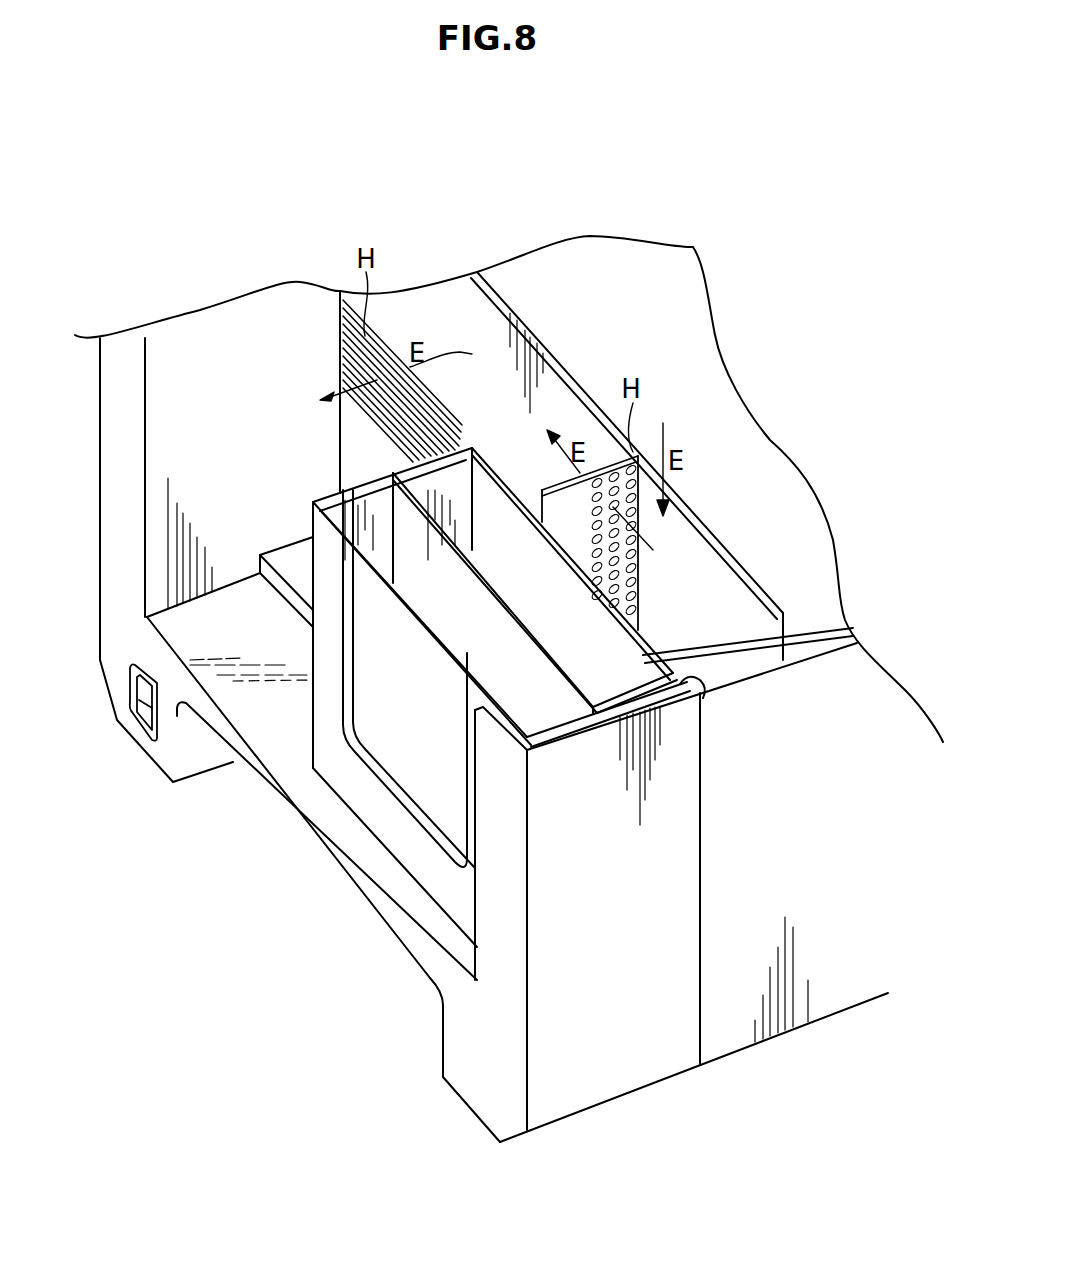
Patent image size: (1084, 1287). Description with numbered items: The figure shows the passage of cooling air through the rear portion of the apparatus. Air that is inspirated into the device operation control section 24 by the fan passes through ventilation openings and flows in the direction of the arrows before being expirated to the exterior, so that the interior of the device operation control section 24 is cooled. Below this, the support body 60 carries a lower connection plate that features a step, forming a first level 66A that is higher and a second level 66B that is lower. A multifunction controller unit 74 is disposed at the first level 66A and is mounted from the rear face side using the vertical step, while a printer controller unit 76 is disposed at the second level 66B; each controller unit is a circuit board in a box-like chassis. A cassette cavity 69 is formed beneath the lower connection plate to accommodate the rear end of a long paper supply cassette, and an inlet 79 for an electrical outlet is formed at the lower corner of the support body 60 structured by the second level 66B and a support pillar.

The device operation control section 24 is at (757, 583).
The support body 60 is at (666, 1050).
The first level 66A is at (290, 547).
The second level 66B is at (173, 615).
The cassette cavity 69 is at (360, 935).
The multifunction controller unit 74 is at (703, 693).
The printer controller unit 76 is at (577, 717).
The inlet 79 is at (138, 688).